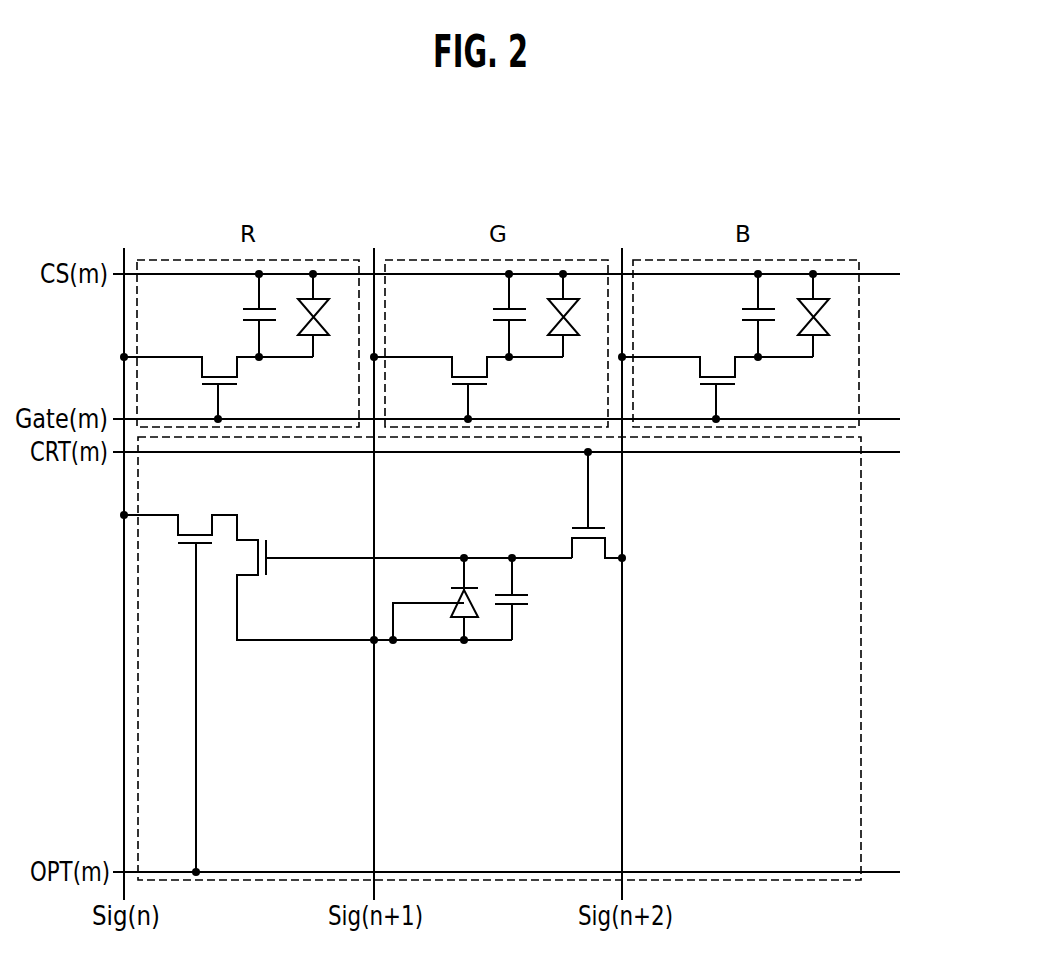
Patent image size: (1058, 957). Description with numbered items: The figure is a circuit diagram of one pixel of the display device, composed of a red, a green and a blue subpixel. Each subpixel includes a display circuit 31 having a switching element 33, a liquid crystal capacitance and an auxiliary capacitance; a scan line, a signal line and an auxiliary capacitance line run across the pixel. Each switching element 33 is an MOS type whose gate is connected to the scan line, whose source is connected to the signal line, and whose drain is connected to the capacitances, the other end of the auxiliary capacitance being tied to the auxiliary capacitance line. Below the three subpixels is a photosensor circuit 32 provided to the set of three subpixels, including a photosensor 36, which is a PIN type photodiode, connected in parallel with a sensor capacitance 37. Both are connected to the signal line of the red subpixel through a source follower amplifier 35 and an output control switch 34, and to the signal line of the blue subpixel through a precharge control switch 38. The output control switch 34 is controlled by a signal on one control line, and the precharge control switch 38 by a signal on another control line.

The display circuit 31 is at (137, 338).
The photosensor circuit 32 is at (863, 840).
The switching element 33 is at (205, 392).
The output control switch 34 is at (194, 518).
The source follower amplifier 35 is at (268, 544).
The photosensor 36 is at (472, 616).
The sensor capacitance 37 is at (515, 609).
The precharge control switch 38 is at (588, 556).